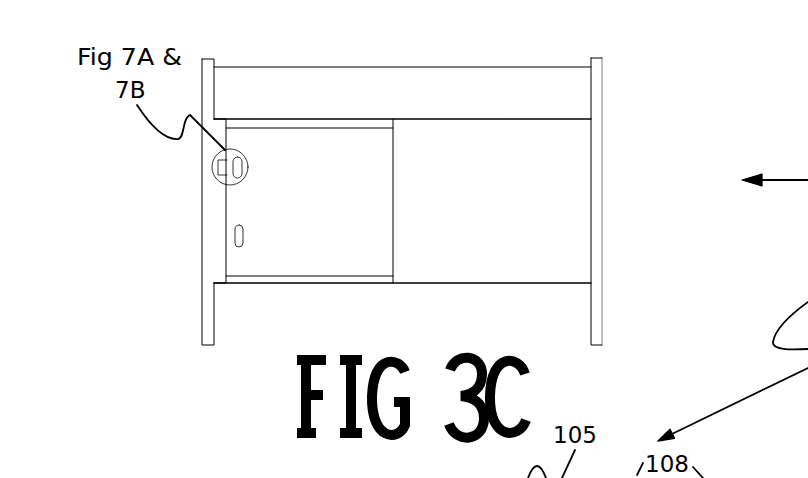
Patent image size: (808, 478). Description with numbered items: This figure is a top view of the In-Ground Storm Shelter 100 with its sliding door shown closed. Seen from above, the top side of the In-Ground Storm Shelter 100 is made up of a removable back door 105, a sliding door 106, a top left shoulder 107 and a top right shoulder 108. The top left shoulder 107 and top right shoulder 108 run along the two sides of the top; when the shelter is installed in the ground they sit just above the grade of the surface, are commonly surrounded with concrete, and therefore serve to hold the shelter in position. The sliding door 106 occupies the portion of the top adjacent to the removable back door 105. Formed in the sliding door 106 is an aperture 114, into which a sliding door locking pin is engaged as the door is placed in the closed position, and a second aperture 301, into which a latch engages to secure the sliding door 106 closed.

The In-Ground Storm Shelter 100 is at (192, 311).
The removable back door 105 is at (557, 205).
The sliding door 106 is at (253, 190).
The top left shoulder 107 is at (557, 82).
The top right shoulder 108 is at (557, 297).
The aperture 114 is at (227, 202).
The aperture 301 is at (235, 237).